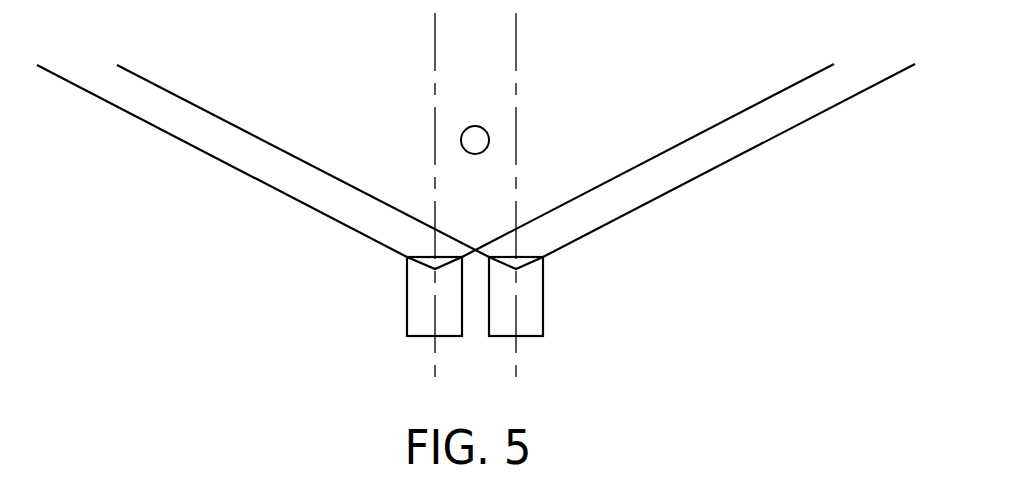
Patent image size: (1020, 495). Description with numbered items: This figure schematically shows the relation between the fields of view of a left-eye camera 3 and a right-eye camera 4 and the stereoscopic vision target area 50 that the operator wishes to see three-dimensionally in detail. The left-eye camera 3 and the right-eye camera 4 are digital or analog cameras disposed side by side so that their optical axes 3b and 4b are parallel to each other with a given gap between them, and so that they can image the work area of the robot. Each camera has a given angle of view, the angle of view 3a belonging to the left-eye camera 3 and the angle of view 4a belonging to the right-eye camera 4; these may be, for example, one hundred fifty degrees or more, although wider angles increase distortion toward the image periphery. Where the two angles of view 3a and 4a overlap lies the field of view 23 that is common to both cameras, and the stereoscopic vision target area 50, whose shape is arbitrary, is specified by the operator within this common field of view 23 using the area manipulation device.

The left-eye camera 3 is at (407, 304).
The right-eye camera 4 is at (543, 303).
The angle of view of left-eye camera 3a is at (797, 82).
The angle of view of right-eye camera 4a is at (880, 82).
The optical axis of left-eye camera 3b is at (435, 372).
The optical axis of right-eye camera 4b is at (516, 372).
The stereoscopic vision target area 50 is at (475, 126).
The common field of view 23 is at (602, 78).